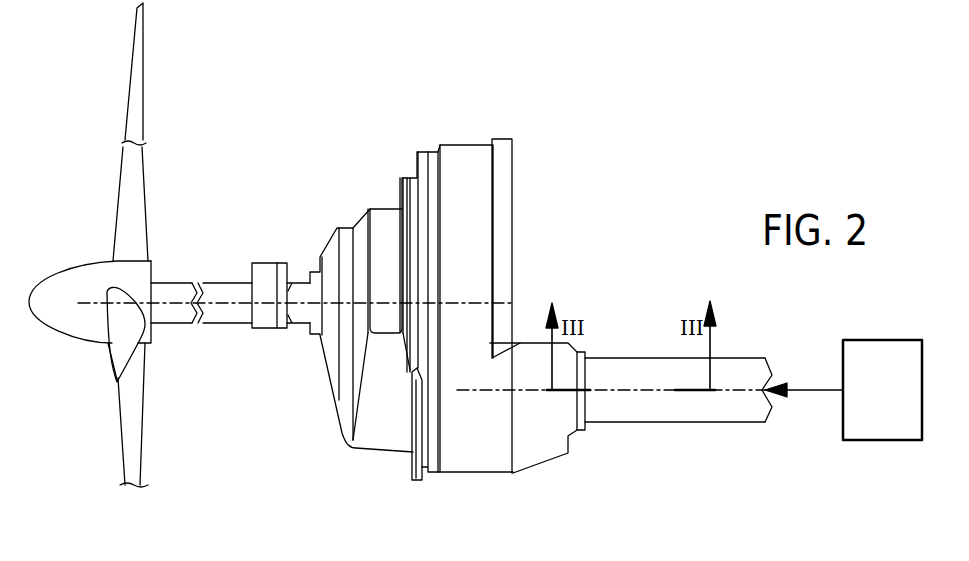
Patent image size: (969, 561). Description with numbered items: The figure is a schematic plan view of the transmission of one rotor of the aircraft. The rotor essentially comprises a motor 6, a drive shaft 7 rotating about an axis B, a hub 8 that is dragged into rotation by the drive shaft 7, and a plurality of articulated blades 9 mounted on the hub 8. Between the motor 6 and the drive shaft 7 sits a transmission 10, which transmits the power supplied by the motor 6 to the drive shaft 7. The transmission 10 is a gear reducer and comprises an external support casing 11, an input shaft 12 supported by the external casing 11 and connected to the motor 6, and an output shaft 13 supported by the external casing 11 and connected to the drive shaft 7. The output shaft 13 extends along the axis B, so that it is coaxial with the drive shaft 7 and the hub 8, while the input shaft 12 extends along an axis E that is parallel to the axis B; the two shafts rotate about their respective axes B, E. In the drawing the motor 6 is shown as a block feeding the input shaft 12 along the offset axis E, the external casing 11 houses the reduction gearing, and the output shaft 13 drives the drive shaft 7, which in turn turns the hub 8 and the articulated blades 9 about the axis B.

The motor 6 is at (872, 365).
The drive shaft 7 is at (223, 315).
The hub 8 is at (53, 278).
The articulated blades 9 is at (128, 192).
The transmission 10 is at (458, 309).
The external support casing 11 is at (448, 165).
The input shaft 12 is at (702, 403).
The output shaft 13 is at (299, 290).
The axis B is at (230, 295).
The axis E is at (495, 390).